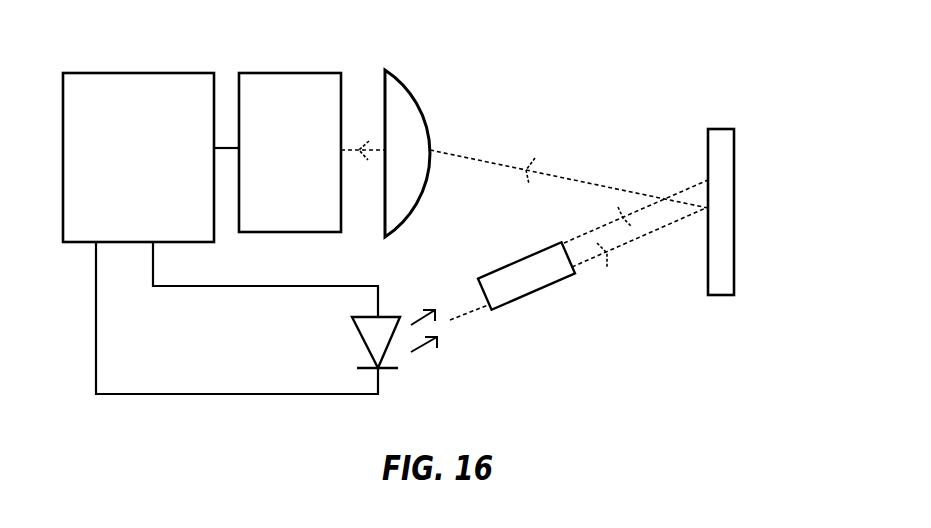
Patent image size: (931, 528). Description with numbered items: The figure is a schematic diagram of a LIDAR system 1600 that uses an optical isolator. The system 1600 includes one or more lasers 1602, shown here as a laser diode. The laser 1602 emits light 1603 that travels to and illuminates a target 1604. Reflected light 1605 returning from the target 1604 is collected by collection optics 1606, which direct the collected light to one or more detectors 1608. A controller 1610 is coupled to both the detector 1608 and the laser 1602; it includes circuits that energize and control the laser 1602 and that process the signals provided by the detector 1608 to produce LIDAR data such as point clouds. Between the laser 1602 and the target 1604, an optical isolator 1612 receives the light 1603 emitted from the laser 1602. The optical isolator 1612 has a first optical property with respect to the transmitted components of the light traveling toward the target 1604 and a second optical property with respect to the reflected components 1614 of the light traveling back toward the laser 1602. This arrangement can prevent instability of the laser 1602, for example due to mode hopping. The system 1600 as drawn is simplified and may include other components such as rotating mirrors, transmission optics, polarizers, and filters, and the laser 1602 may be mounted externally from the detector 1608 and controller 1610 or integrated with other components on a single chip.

The LIDAR system 1600 is at (660, 69).
The laser 1602 is at (352, 327).
The light 1603 is at (657, 233).
The target 1604 is at (735, 253).
The reflected light 1605 is at (592, 182).
The collection optics 1606 is at (423, 108).
The detector 1608 is at (290, 73).
The controller 1610 is at (112, 73).
The optical isolator 1612 is at (528, 296).
The reflected components 1614 is at (602, 228).